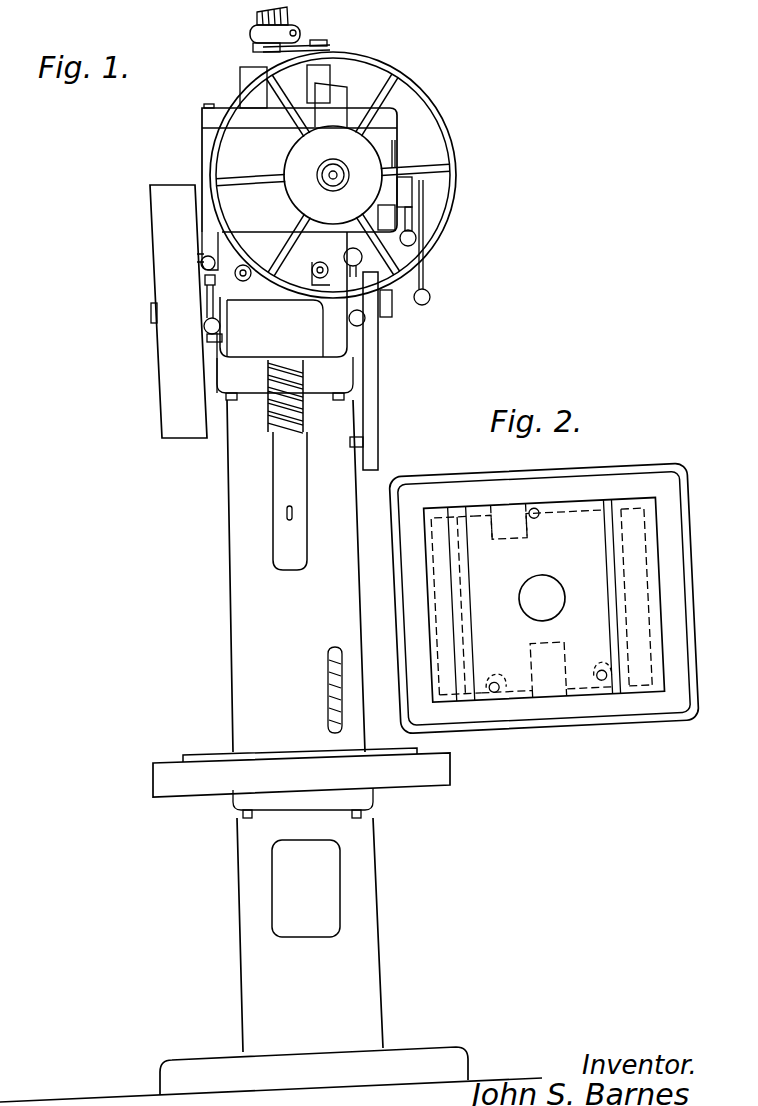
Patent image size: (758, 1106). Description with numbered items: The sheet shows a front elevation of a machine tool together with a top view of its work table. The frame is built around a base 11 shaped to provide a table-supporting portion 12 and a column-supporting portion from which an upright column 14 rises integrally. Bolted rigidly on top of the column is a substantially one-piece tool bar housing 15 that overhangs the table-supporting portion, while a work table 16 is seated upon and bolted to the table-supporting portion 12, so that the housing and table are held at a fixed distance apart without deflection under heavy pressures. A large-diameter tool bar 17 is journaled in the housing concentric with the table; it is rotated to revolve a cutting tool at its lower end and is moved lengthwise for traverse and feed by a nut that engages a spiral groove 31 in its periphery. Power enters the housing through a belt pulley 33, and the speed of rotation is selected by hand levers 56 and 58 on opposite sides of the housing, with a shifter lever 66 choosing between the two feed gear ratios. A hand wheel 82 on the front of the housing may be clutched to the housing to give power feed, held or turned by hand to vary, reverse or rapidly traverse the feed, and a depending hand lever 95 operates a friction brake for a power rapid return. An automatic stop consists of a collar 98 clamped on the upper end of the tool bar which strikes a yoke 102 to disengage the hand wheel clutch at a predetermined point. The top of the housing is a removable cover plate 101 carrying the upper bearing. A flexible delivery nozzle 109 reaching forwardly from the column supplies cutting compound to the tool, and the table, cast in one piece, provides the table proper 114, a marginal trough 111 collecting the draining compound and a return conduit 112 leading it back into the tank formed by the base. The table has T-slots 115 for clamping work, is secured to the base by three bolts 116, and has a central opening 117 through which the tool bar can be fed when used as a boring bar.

In FIG. 1, the base 11 is at (245, 1018).
In FIG. 1, the table-supporting portion 12 is at (360, 833).
In FIG. 1, the upright column 14 is at (241, 521).
In FIG. 1, the tool bar housing 15 is at (212, 153).
In FIG. 1, the work table 16 is at (160, 778).
In FIG. 2, the work table 16 is at (616, 722).
In FIG. 1, the tool bar 17 is at (283, 470).
In FIG. 1, the spiral groove 31 is at (300, 430).
In FIG. 1, the belt pulley 33 is at (165, 393).
In FIG. 1, the hand lever 56 is at (201, 259).
In FIG. 1, the hand lever 58 is at (364, 323).
In FIG. 1, the shifter lever 66 is at (414, 236).
In FIG. 1, the hand wheel 82 is at (424, 96).
In FIG. 1, the hand lever 95 is at (430, 296).
In FIG. 1, the collar 98 is at (250, 35).
In FIG. 1, the cover plate 101 is at (203, 118).
In FIG. 1, the yoke 102 is at (322, 50).
In FIG. 1, the flexible delivery nozzle 109 is at (330, 687).
In FIG. 2, the marginal trough 111 is at (544, 598).
In FIG. 2, the return conduit 112 is at (543, 600).
In FIG. 2, the table proper 114 is at (544, 599).
In FIG. 2, the T-slots 115 is at (542, 600).
In FIG. 2, the bolts 116 is at (545, 599).
In FIG. 2, the central opening 117 is at (542, 598).